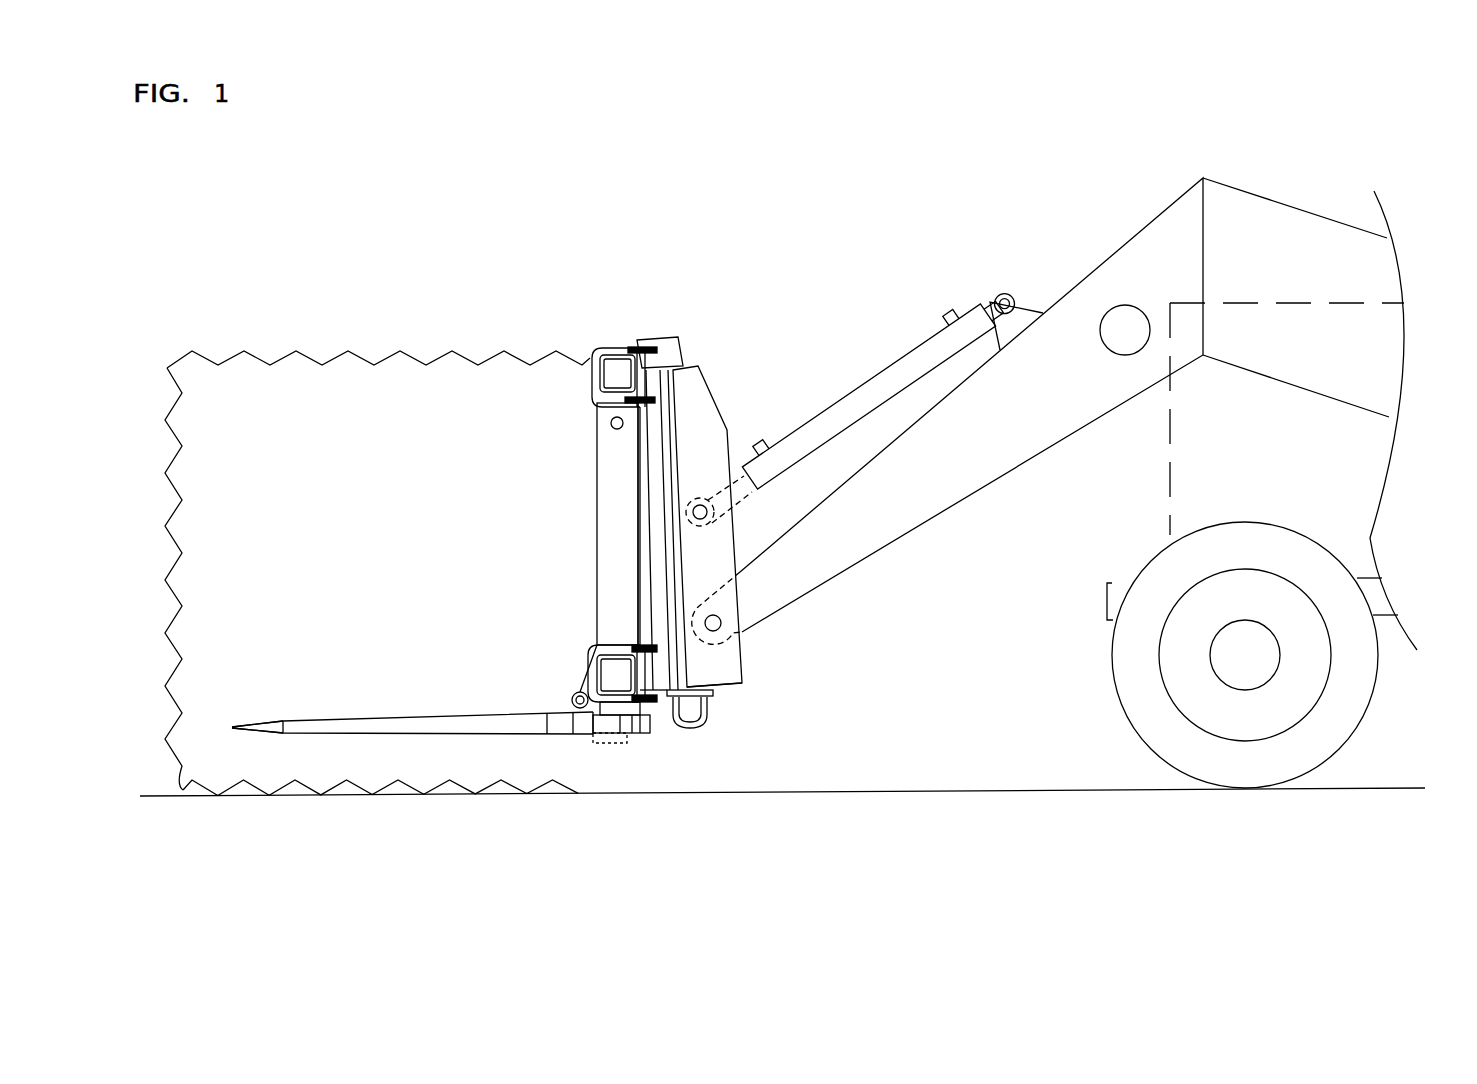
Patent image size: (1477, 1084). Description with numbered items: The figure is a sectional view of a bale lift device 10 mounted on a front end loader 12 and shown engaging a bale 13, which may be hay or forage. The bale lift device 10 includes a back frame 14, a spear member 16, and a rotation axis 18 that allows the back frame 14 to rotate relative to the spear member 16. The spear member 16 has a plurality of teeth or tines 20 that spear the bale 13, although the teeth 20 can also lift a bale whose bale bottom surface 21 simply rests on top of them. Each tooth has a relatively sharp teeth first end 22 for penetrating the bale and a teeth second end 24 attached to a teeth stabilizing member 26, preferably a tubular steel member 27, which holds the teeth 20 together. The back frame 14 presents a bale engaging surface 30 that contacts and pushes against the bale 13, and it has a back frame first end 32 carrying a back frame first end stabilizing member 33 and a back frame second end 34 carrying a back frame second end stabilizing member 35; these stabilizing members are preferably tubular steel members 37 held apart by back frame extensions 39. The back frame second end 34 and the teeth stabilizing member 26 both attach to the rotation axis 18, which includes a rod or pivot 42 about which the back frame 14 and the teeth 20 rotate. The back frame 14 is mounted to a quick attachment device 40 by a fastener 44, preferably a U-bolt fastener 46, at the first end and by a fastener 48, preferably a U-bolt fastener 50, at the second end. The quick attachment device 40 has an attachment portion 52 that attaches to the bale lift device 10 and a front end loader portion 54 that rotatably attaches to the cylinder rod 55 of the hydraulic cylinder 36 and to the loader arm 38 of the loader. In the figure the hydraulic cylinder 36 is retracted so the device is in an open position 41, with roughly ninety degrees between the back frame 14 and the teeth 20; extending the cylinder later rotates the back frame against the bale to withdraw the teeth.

The bale lift device 10 is at (560, 283).
The front end loader 12 is at (1018, 222).
The bale 13 is at (385, 323).
The back frame 14 is at (612, 476).
The spear member 16 is at (410, 718).
The rotation axis 18 is at (575, 693).
The teeth or tines 20 is at (465, 727).
The bale bottom surface 21 is at (385, 795).
The teeth first end 22 is at (262, 722).
The teeth second end 24 is at (560, 727).
The teeth stabilizing member 26 is at (624, 748).
The tubular steel member 27 is at (615, 750).
The bale engaging surface 30 is at (600, 423).
The back frame first end 32 is at (575, 342).
The back frame first end stabilizing member 33 is at (623, 356).
The back frame second end 34 is at (565, 640).
The back frame second end stabilizing member 35 is at (608, 653).
The hydraulic cylinder 36 is at (892, 385).
The tubular steel members 37 is at (604, 380).
The loader arm 38 is at (930, 478).
The back frame extensions 39 is at (612, 527).
The quick attachment device 40 is at (727, 338).
The open position 41 is at (555, 205).
The rod or pivot 42 is at (572, 698).
The fastener 44 is at (600, 347).
The U-bolt fastener 46 is at (617, 354).
The fastener 48 is at (611, 647).
The U-bolt fastener 50 is at (610, 737).
The attachment portion 52 is at (700, 418).
The front end loader portion 54 is at (732, 663).
The cylinder rod 55 is at (740, 480).